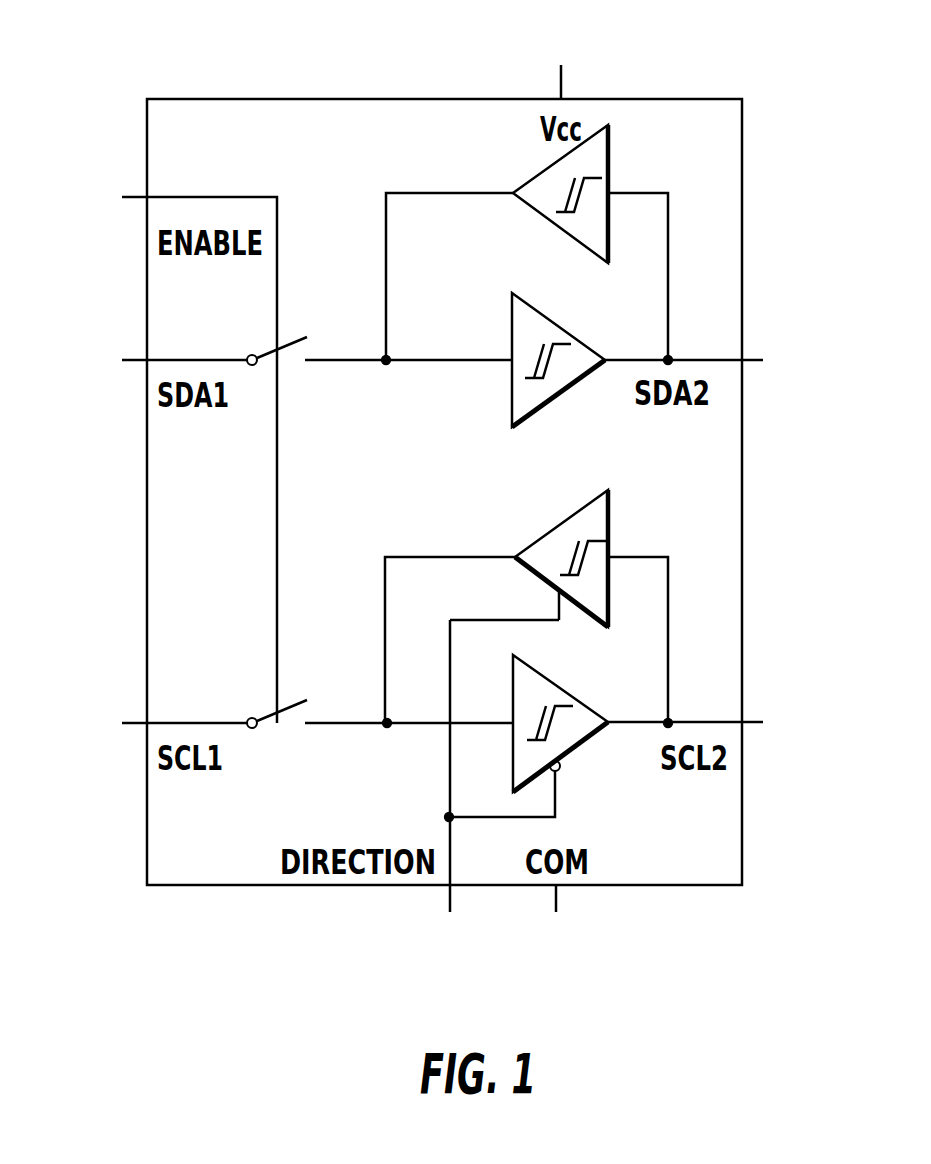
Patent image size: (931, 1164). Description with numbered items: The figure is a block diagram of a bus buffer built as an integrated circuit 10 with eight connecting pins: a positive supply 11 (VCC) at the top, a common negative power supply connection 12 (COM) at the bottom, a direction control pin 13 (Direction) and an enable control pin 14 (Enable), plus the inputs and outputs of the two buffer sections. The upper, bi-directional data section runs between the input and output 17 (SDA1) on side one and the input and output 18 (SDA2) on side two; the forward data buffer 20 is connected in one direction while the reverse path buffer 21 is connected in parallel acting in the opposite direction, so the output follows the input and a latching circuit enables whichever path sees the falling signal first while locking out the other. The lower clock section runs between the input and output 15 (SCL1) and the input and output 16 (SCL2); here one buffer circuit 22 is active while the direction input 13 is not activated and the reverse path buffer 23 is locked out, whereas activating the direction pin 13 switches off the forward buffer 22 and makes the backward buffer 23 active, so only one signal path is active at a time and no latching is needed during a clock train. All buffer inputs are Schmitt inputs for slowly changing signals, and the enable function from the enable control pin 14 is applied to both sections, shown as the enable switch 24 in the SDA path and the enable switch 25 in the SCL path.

The integrated circuit 10 is at (190, 98).
The positive supply 11 is at (561, 74).
The common negative power supply connection 12 is at (558, 898).
The direction control pin 13 is at (448, 898).
The enable control pin 14 is at (140, 195).
The input and output SCL1 15 is at (128, 720).
The input and output SCL2 16 is at (756, 720).
The input and output SDA1 17 is at (135, 357).
The input and output SDA2 18 is at (755, 358).
The forward data buffer 20 is at (512, 405).
The reverse path buffer 21 is at (610, 172).
The forward buffer 22 is at (578, 748).
The reverse path buffer 23 is at (610, 522).
The SDA enable switch 24 is at (266, 355).
The SCL enable switch 25 is at (266, 718).